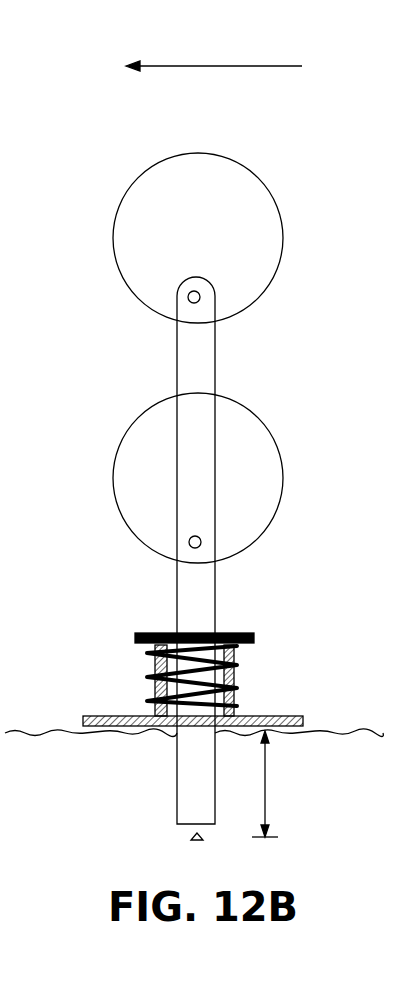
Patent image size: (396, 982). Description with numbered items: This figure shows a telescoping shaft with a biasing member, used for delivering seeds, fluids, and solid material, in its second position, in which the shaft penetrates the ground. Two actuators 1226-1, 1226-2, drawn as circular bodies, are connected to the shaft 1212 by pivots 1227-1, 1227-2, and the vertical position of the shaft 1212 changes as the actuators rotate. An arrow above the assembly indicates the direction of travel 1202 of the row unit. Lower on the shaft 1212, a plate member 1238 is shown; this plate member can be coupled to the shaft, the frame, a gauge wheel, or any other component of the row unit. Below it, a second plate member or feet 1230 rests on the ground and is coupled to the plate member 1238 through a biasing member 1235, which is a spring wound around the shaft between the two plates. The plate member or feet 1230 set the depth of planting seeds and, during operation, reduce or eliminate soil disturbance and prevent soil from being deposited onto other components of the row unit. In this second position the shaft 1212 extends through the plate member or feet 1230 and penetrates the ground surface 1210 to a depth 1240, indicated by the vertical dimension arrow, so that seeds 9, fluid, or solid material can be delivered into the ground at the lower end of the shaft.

The direction of travel 1202 is at (212, 65).
The actuator 1226-1 is at (220, 153).
The actuator 1226-2 is at (240, 402).
The shaft 1212 is at (216, 360).
The pivot 1227-1 is at (189, 301).
The pivot 1227-2 is at (190, 546).
The plate member 1238 is at (247, 632).
The biasing member 1235 is at (238, 662).
The plate member 1230 is at (285, 716).
The ground surface 1210 is at (97, 731).
The depth 1240 is at (268, 790).
The seeds 9 is at (204, 846).